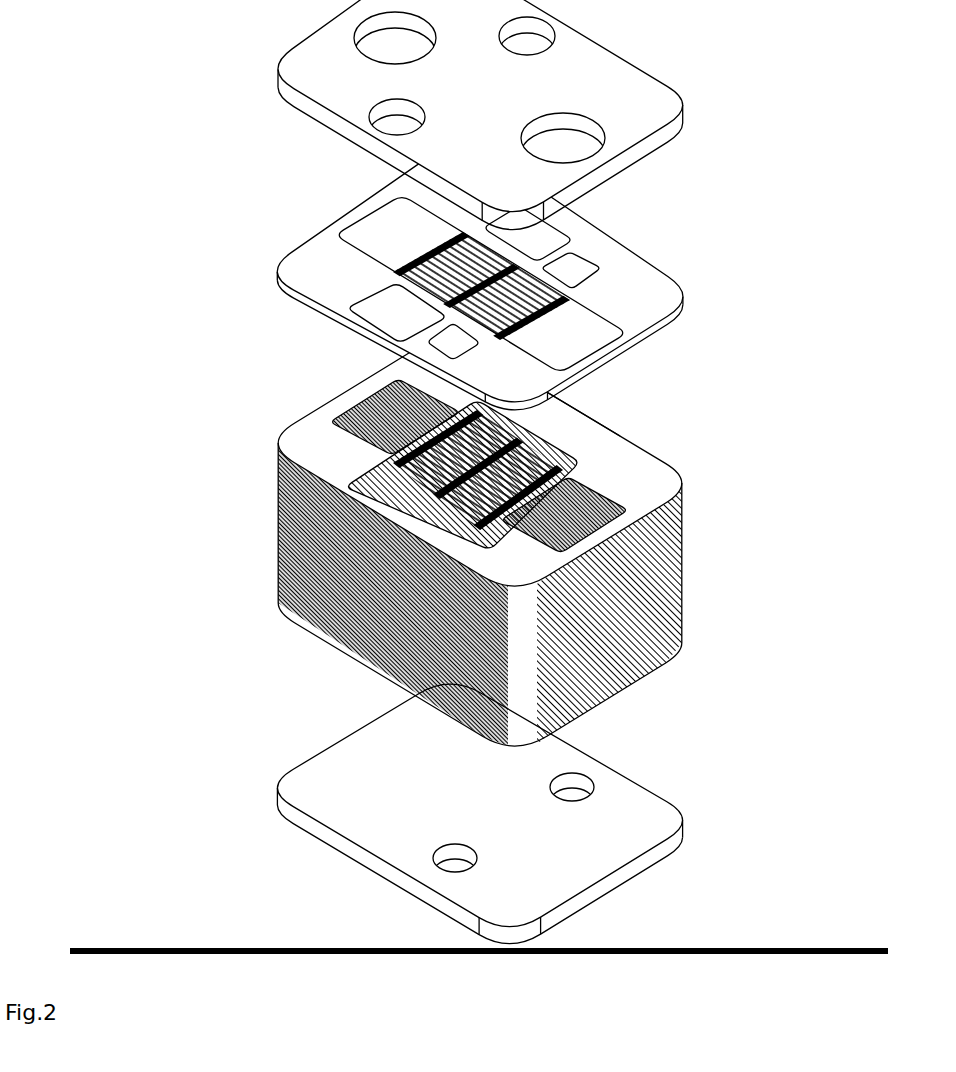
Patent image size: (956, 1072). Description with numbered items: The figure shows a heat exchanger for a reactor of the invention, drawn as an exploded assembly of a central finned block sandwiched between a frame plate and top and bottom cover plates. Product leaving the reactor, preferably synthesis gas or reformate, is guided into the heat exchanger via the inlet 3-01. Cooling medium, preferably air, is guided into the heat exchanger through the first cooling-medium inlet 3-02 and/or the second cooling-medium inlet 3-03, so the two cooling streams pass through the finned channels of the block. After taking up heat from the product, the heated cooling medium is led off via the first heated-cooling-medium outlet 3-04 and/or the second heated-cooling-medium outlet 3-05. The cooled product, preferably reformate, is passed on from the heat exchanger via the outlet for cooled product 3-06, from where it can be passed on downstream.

The inlet for product from reactor 3-01 is at (385, 412).
The inlet 1 for cooling medium 3-02 is at (428, 537).
The inlet 2 for cooling medium 3-03 is at (386, 502).
The outlet 1 for heated cooling medium 3-04 is at (563, 402).
The outlet 2 for heated cooling medium 3-05 is at (593, 442).
The outlet for cooled product 3-06 is at (567, 516).